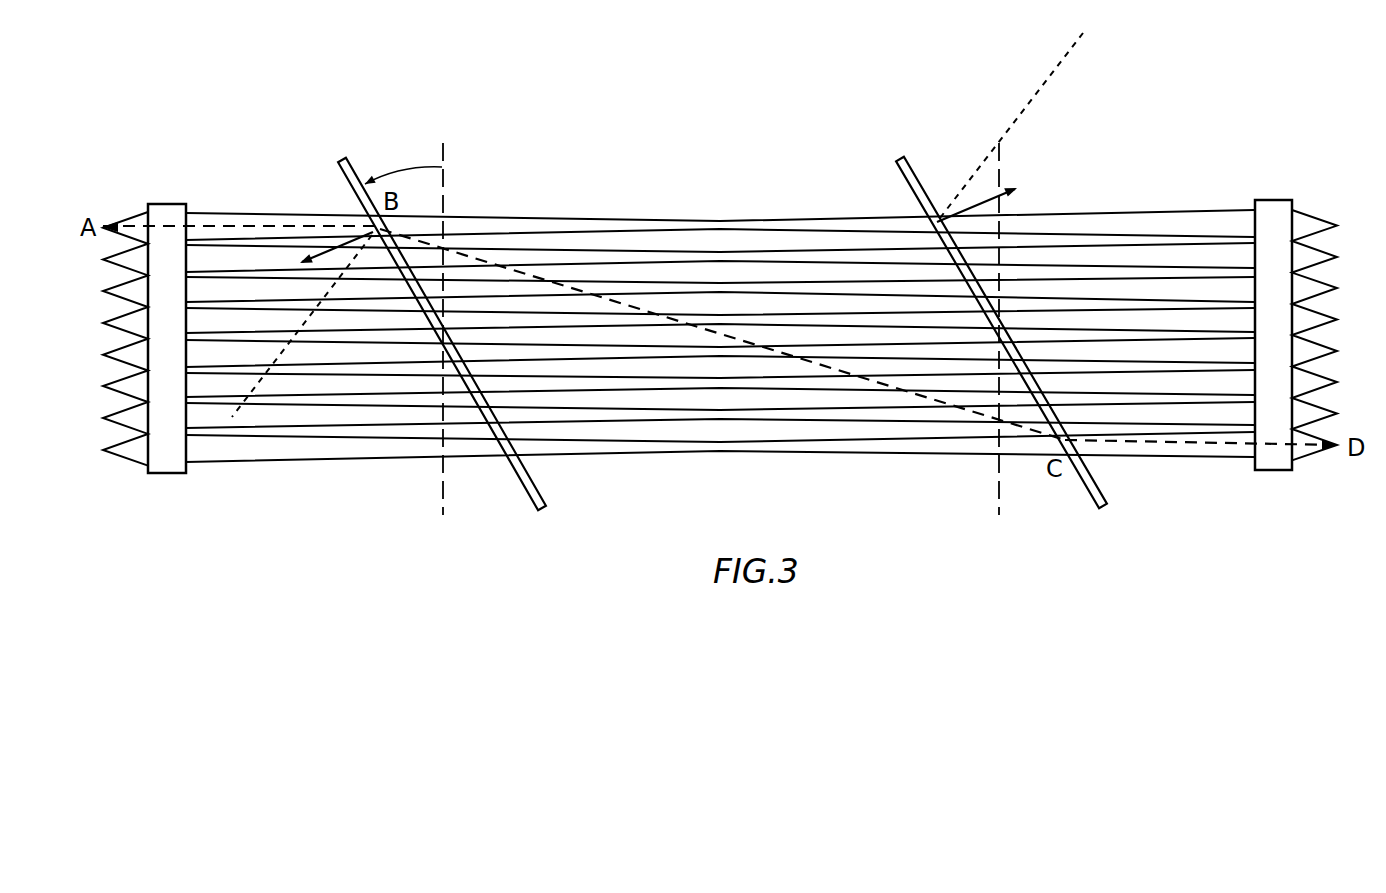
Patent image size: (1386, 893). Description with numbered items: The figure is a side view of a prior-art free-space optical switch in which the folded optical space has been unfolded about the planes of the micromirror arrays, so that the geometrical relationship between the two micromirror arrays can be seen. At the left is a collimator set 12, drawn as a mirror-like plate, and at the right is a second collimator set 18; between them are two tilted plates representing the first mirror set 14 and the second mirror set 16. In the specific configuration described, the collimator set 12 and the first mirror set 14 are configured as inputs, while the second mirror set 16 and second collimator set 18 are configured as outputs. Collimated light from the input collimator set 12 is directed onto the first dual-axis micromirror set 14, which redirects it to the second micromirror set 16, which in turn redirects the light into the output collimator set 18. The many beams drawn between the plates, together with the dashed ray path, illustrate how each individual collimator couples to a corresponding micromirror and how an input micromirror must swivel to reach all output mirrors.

The collimator set 12 is at (166, 204).
The first mirror set 14 is at (519, 476).
The second mirror set 16 is at (908, 185).
The second collimator set 18 is at (1272, 200).